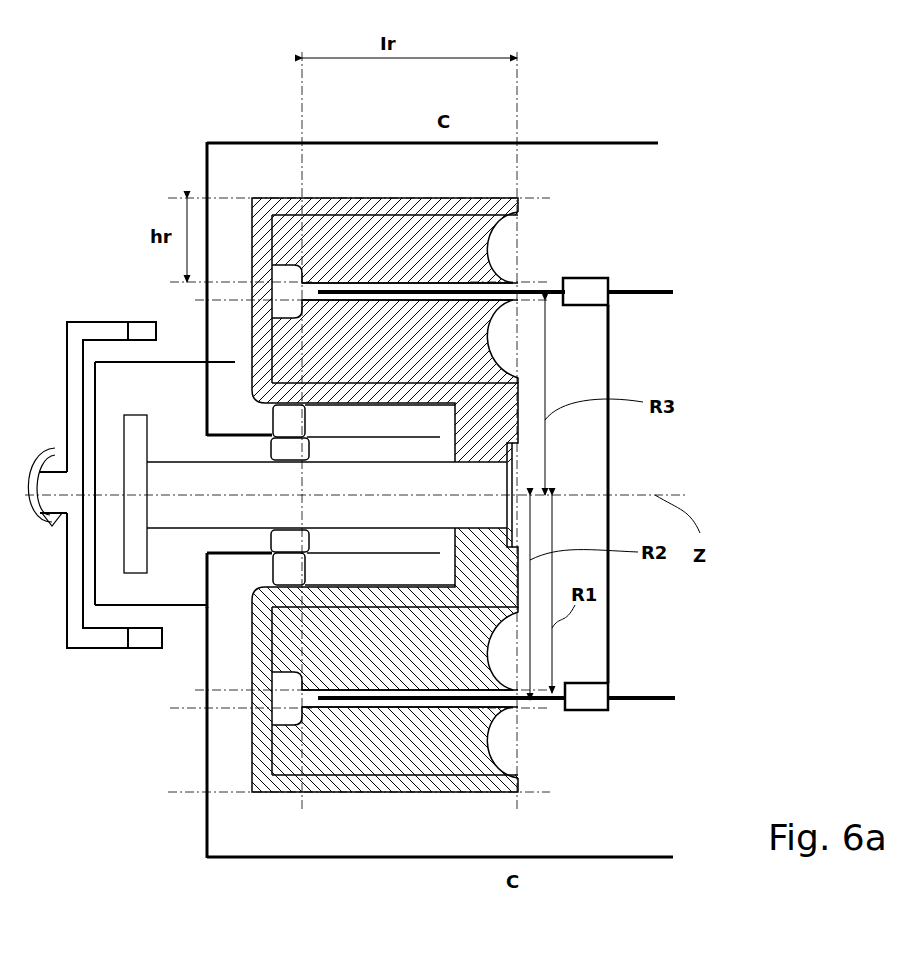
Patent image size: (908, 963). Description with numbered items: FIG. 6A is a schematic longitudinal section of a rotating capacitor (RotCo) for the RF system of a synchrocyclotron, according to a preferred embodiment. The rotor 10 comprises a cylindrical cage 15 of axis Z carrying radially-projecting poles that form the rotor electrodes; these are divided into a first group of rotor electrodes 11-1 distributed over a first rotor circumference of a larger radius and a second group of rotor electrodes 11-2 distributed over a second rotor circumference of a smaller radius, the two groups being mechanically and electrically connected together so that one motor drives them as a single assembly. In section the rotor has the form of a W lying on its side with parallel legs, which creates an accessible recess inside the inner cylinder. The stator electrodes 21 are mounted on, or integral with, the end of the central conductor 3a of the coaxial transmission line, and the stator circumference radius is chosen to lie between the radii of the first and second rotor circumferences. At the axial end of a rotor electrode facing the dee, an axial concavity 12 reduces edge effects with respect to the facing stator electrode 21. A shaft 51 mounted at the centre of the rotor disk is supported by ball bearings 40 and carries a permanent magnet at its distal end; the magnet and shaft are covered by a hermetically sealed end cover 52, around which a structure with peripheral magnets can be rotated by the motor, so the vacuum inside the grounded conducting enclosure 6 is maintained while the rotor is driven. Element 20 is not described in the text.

The central conductor 3a is at (638, 313).
The conducting enclosure 6 is at (268, 178).
The rotor 10 is at (505, 420).
The first group of rotor electrodes 11-1 is at (337, 242).
The second group of rotor electrodes 11-2 is at (320, 337).
The axial concavity 12 is at (497, 242).
The cylindrical cage 15 is at (278, 207).
The terminal 20 is at (585, 292).
The stator electrodes 21 is at (553, 288).
The ball bearings 40 is at (286, 568).
The shaft 51 is at (396, 506).
The hermetically sealed end cover 52 is at (160, 604).